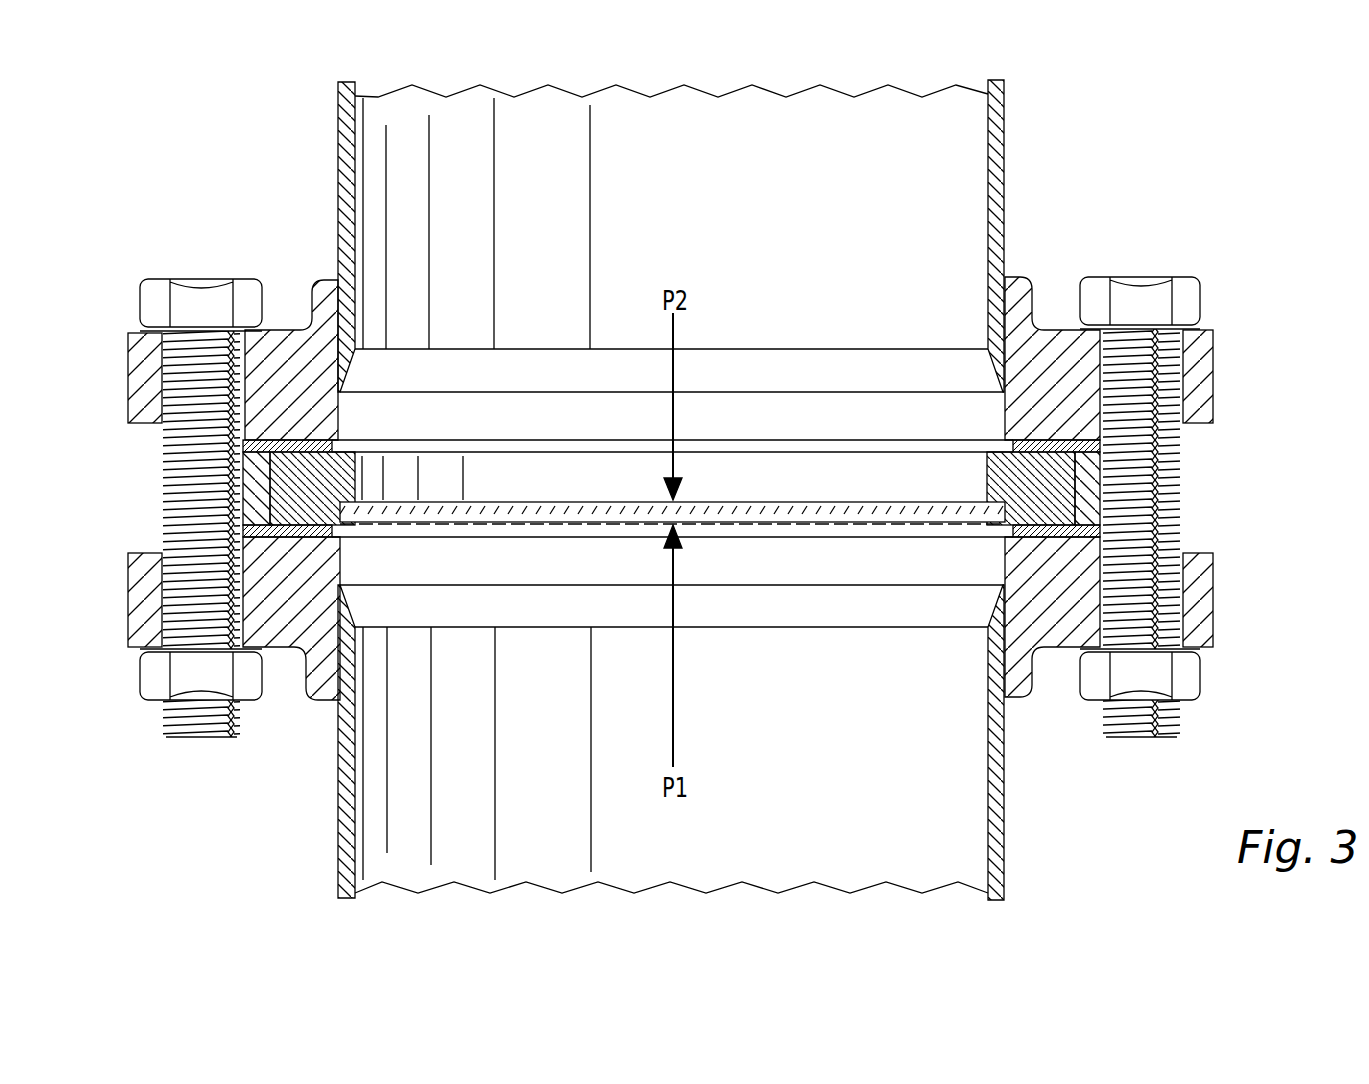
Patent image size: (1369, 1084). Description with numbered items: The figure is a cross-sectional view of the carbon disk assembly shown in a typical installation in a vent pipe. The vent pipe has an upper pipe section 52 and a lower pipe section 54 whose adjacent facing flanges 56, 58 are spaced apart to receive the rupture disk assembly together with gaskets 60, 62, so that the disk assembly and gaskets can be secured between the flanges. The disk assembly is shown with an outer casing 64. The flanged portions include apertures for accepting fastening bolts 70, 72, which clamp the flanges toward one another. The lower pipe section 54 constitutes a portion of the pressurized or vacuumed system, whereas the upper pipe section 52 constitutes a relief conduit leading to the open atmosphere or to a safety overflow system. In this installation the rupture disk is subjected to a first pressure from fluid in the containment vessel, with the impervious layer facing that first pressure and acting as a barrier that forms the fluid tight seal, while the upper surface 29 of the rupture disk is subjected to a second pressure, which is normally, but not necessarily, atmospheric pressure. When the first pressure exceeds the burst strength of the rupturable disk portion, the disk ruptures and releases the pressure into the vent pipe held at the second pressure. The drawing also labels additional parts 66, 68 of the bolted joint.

The upper surface 29 is at (795, 502).
The upper pipe section 52 is at (1005, 155).
The lower pipe section 54 is at (1005, 810).
The flange 56 is at (1040, 283).
The flange 58 is at (1005, 697).
The gasket 60 is at (285, 440).
The gasket 62 is at (297, 537).
The outer casing 64 is at (255, 488).
The bolt 66 is at (1147, 473).
The bolt 68 is at (207, 583).
The fastening bolt 70 is at (1195, 298).
The fastening bolt 72 is at (148, 297).